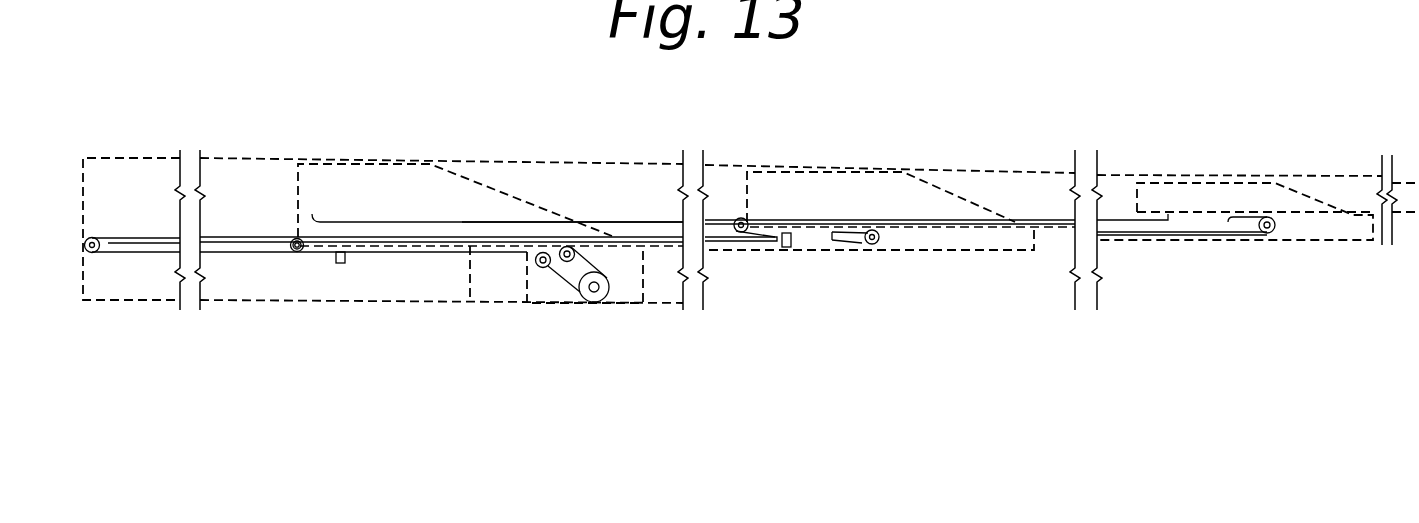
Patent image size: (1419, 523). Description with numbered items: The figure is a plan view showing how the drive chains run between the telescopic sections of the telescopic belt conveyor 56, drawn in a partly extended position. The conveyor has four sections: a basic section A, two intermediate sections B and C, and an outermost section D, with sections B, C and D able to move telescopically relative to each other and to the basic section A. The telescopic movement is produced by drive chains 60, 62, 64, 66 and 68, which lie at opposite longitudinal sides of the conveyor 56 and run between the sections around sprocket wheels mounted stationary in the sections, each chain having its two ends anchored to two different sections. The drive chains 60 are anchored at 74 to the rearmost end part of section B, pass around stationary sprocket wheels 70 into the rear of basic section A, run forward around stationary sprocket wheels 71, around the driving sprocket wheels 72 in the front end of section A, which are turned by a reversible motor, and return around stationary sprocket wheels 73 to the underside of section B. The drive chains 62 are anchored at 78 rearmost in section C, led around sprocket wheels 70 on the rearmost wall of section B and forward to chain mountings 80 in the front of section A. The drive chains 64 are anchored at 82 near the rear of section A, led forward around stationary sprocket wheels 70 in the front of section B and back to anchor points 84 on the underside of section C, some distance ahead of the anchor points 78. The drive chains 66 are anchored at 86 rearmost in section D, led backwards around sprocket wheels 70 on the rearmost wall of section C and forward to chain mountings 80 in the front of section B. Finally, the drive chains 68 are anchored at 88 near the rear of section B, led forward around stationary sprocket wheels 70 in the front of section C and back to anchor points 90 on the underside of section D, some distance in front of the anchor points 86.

The telescopic belt conveyor 56 is at (561, 162).
The drive chains 60 is at (167, 315).
The drive chains 62 is at (650, 240).
The drive chains 64 is at (115, 240).
The drive chains 66 is at (1113, 220).
The drive chains 68 is at (462, 222).
The stationary sprocket wheels 70 is at (92, 253).
The stationary sprocket wheels 71 is at (541, 268).
The driving sprocket wheels 72 is at (596, 295).
The stationary sprocket wheels 73 is at (575, 252).
The anchor point 74 is at (296, 240).
The anchor point 78 is at (775, 238).
The chain mountings 80 is at (340, 263).
The anchor point 82 is at (117, 254).
The anchor points 84 is at (833, 233).
The anchor point 86 is at (1173, 215).
The anchor point 88 is at (313, 214).
The anchor points 90 is at (1228, 218).
The basic section A is at (130, 162).
The intermediate section B is at (397, 162).
The intermediate section C is at (808, 173).
The outermost section D is at (1348, 180).